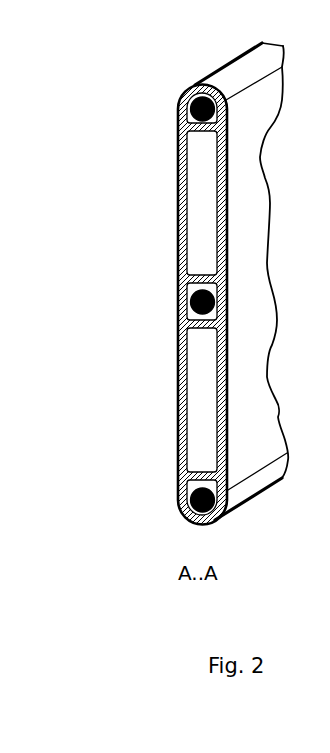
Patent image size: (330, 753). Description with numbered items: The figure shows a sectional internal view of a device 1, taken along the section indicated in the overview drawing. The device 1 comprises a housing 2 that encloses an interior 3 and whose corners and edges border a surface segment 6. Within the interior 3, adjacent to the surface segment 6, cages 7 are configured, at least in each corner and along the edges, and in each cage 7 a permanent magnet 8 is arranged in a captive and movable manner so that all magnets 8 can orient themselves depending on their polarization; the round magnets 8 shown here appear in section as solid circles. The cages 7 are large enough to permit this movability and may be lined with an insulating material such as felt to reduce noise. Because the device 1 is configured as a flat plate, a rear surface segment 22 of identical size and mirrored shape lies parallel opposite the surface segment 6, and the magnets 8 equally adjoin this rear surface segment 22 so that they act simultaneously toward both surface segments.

The device 1 is at (157, 480).
The housing 2 is at (182, 177).
The interior 3 is at (182, 280).
The surface segment 6 is at (248, 388).
The cage 7 is at (182, 100).
The permanent magnet 8 is at (182, 117).
The rear surface segment 22 is at (177, 245).